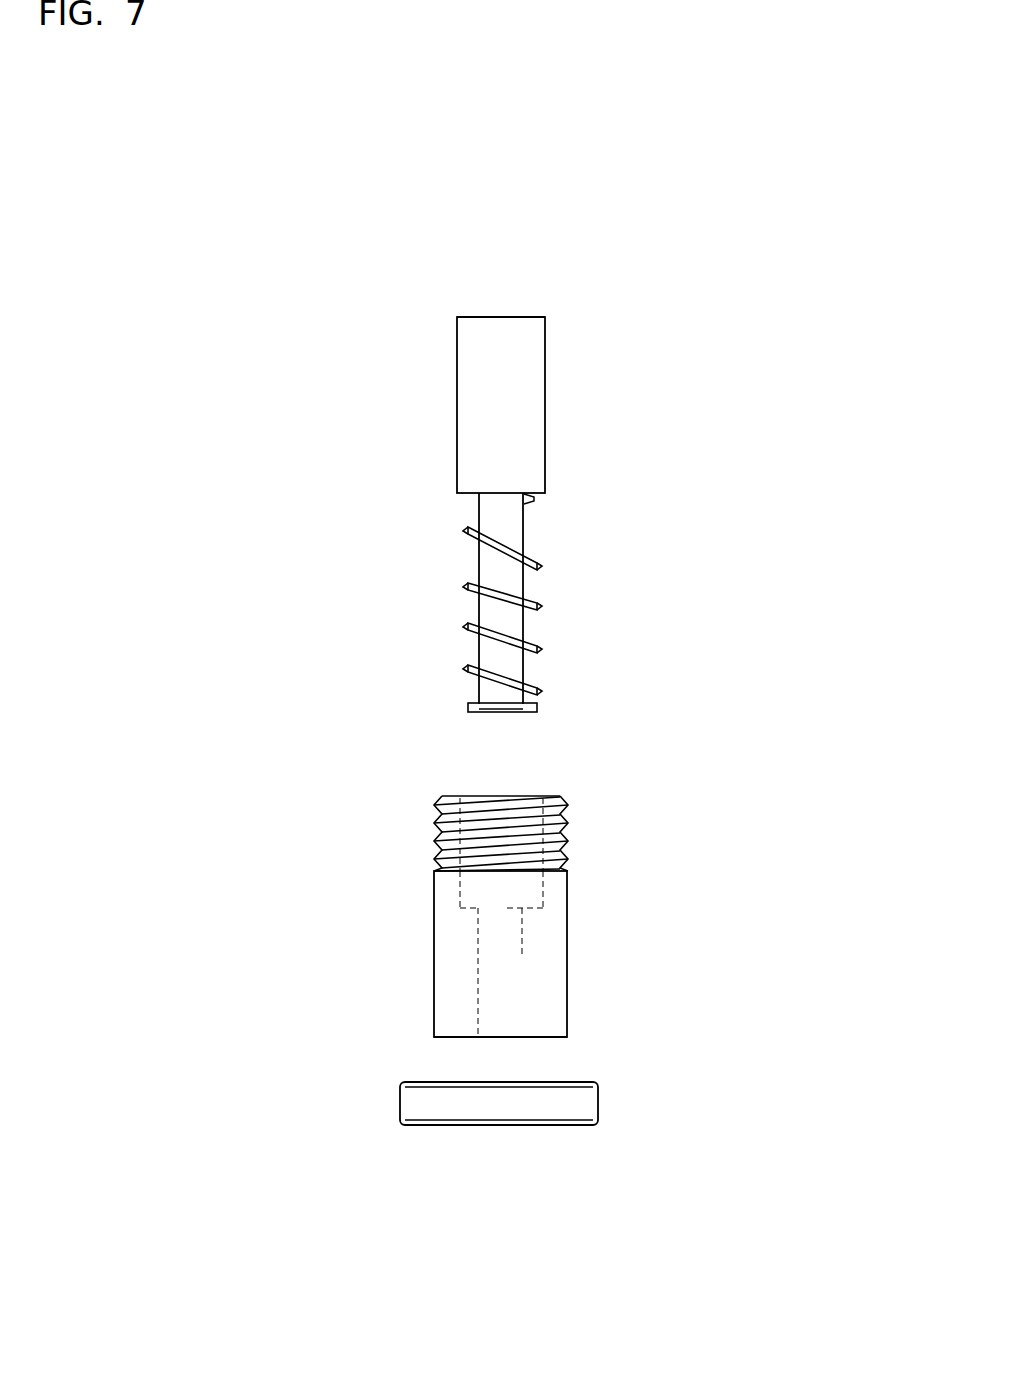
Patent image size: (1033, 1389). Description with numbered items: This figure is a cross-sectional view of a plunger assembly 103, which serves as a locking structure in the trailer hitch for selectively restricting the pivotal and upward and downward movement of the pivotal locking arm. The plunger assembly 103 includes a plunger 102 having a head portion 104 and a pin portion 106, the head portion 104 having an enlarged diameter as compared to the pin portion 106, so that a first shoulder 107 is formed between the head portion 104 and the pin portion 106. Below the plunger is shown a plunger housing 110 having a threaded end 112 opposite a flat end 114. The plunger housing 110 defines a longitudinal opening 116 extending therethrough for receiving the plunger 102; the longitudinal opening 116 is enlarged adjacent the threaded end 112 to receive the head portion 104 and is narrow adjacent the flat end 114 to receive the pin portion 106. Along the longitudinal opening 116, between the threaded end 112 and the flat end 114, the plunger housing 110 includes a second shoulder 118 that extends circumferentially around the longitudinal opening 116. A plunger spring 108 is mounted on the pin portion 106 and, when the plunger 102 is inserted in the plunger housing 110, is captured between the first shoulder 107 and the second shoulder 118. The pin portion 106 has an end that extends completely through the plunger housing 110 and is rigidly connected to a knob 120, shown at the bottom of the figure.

The plunger 102 is at (545, 418).
The plunger assembly 103 is at (735, 958).
The head portion 104 is at (545, 344).
The pin portion 106 is at (523, 627).
The first shoulder 107 is at (535, 496).
The plunger spring 108 is at (468, 590).
The plunger housing 110 is at (567, 910).
The threaded end 112 is at (566, 823).
The flat end 114 is at (567, 1038).
The longitudinal opening 116 is at (478, 980).
The second shoulder 118 is at (462, 909).
The knob 120 is at (598, 1105).